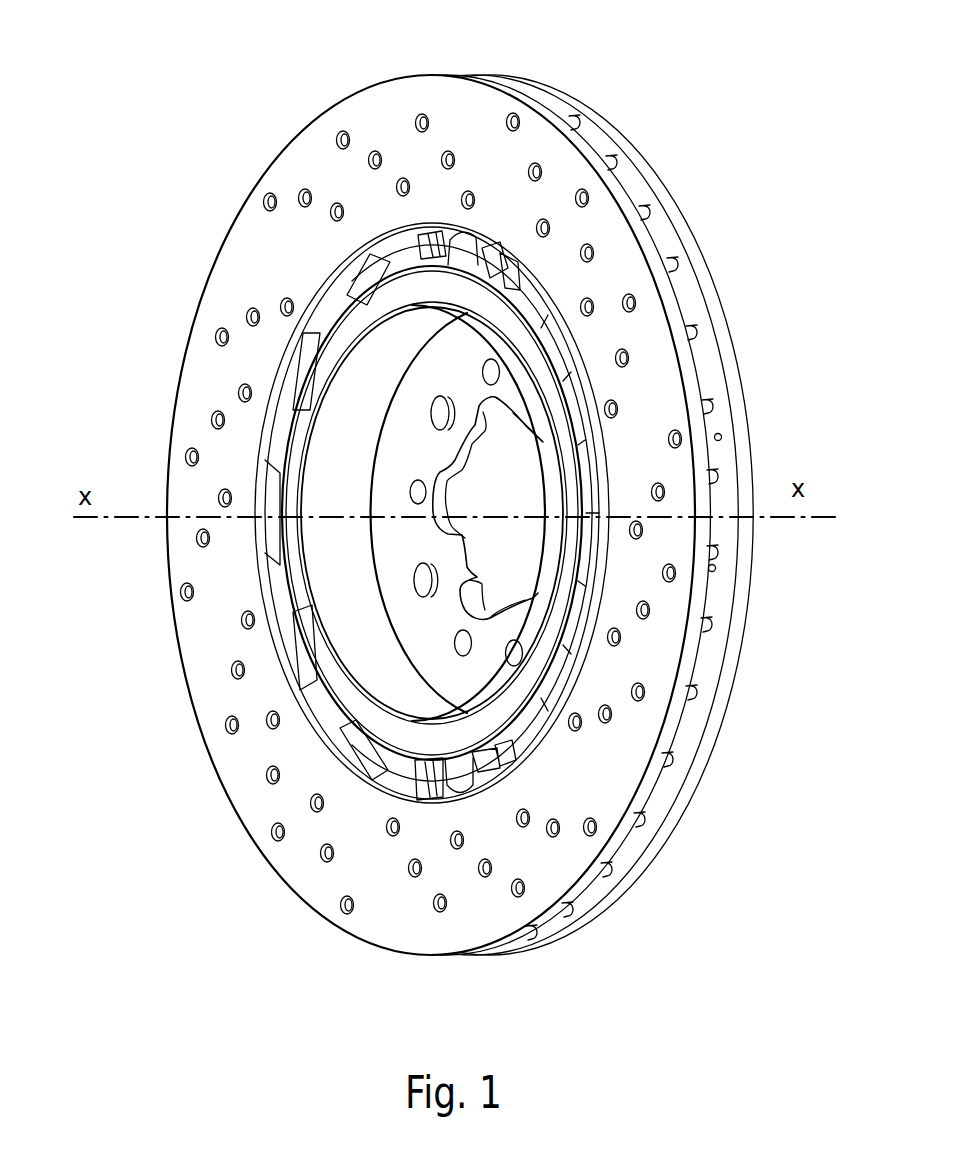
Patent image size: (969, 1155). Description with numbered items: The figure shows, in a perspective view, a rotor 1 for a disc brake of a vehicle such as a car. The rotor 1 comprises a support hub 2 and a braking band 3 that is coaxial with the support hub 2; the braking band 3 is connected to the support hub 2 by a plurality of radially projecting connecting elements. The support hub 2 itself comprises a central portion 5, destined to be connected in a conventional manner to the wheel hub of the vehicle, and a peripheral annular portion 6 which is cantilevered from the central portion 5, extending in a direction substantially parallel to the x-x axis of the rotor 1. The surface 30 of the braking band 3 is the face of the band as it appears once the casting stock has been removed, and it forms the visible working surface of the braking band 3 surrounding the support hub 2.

The rotor 1 is at (714, 127).
The support hub 2 is at (356, 630).
The braking band 3 is at (306, 858).
The surface of the braking band 30 is at (245, 755).
The central portion 5 is at (515, 385).
The peripheral annular portion 6 is at (367, 392).